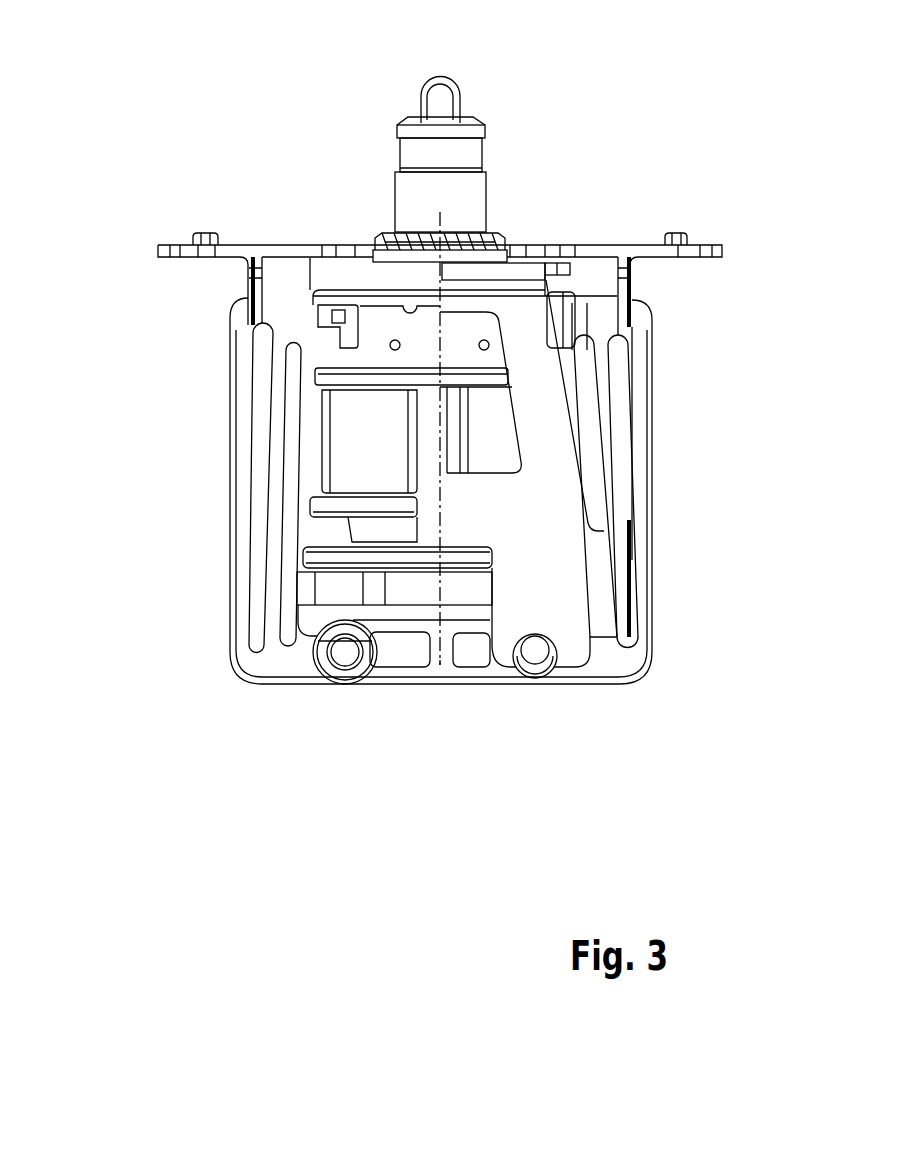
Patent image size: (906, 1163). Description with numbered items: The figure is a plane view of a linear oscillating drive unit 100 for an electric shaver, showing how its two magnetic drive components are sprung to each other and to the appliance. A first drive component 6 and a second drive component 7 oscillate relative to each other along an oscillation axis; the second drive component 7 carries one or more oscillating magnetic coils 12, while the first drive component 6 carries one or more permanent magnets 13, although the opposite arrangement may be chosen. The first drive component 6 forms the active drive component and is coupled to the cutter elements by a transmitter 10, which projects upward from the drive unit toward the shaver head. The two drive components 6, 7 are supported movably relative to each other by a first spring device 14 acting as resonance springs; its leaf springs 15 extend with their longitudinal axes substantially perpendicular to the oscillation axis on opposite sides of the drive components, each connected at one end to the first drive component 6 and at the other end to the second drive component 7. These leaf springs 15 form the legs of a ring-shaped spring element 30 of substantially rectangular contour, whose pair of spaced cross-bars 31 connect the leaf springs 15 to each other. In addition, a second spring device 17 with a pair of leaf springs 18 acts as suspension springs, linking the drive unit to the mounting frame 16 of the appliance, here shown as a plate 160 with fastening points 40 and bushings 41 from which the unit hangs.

The actuating device 100 is at (378, 135).
The transmitter 10 is at (487, 113).
The mounting plate 160 is at (165, 240).
The mounting frame 16 is at (688, 240).
The cross-bars 31 is at (303, 296).
The second drive component 7 is at (405, 357).
The magnetic coils 12 is at (340, 446).
The permanent magnets 13 is at (298, 558).
The first drive component 6 is at (484, 588).
The lever 40 is at (568, 617).
The bushing 41 is at (351, 660).
The first spring device 14 is at (235, 470).
The leaf springs 15 is at (242, 523).
The second spring device 17 is at (636, 453).
The leaf springs 18 is at (634, 480).
The ring-shaped spring element 30 is at (263, 686).